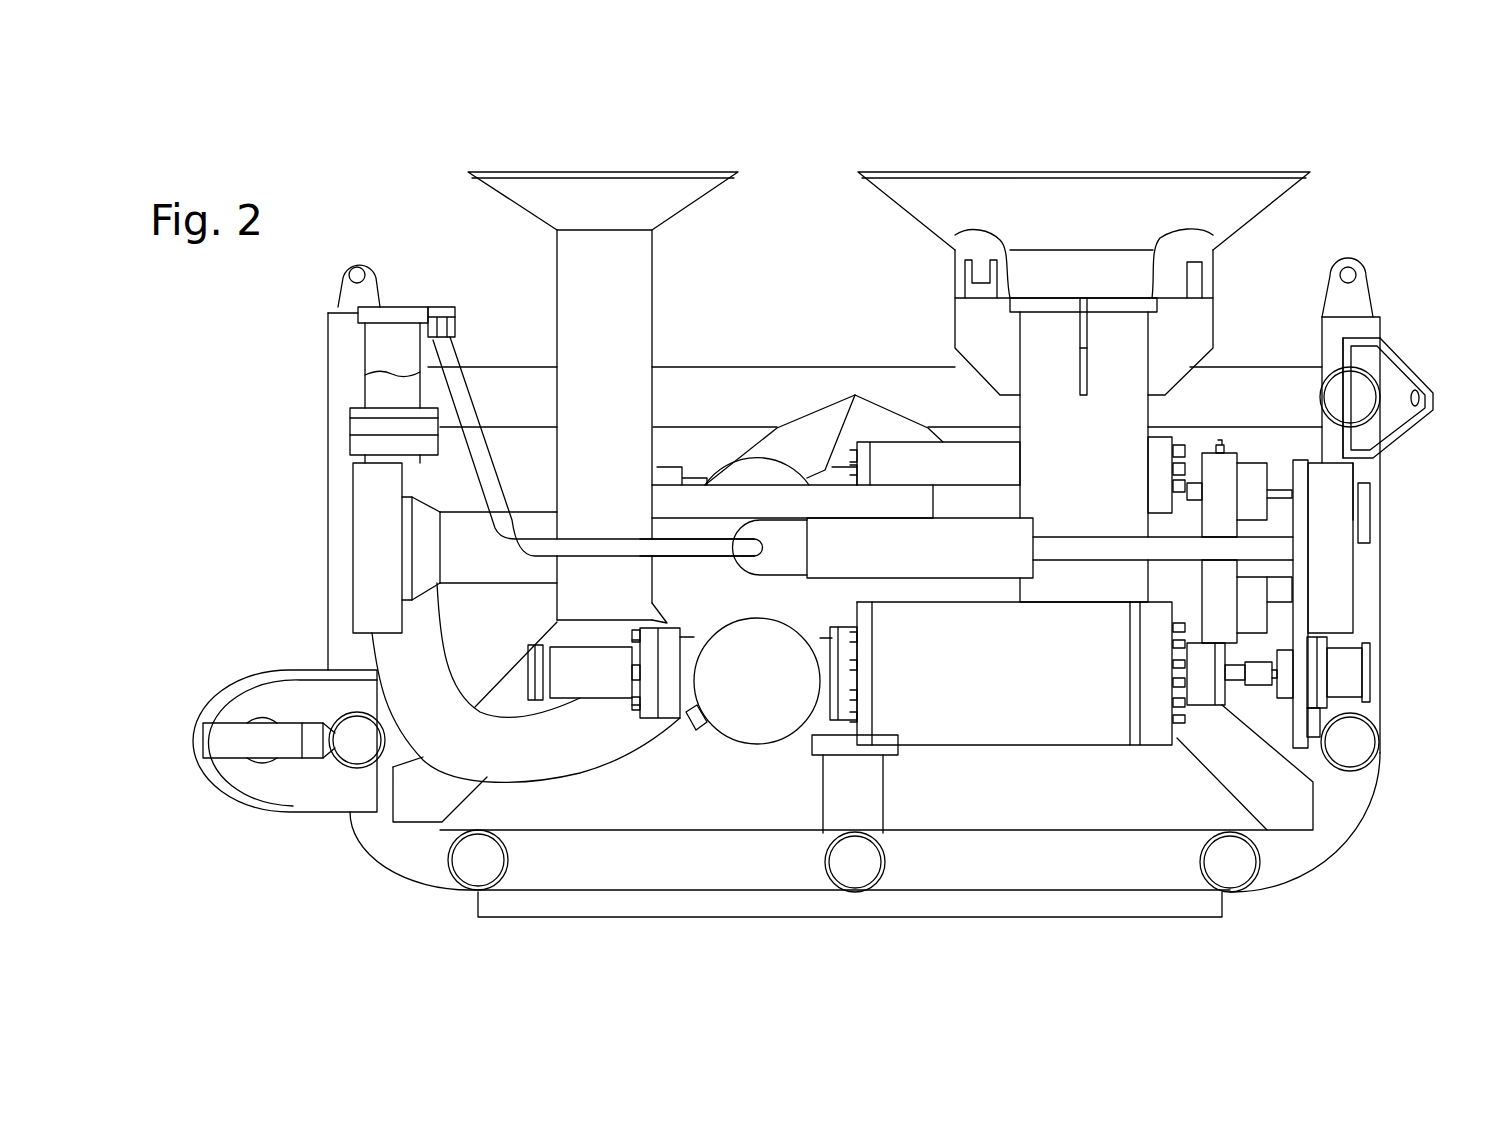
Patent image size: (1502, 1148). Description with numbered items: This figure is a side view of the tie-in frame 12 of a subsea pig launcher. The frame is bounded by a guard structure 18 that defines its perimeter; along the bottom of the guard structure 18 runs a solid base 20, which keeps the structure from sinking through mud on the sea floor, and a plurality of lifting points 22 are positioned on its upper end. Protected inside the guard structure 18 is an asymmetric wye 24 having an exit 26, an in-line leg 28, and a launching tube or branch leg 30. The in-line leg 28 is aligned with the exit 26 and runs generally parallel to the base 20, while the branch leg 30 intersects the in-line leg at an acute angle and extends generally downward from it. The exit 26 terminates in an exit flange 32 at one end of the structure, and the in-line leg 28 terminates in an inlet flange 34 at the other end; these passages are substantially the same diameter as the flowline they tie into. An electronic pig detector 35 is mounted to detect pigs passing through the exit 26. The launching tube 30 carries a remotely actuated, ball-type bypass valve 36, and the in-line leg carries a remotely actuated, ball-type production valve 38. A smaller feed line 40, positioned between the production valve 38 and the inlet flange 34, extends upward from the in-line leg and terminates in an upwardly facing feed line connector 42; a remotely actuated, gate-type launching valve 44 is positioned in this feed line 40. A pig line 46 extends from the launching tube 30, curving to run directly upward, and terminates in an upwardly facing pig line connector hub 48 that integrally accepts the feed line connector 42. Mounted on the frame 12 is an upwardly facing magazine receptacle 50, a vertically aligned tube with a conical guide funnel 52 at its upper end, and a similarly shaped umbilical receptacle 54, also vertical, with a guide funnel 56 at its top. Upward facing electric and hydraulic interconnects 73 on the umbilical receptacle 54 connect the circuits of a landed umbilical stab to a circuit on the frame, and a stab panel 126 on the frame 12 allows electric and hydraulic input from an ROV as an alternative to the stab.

The tie-in frame 12 is at (1388, 712).
The guard structure 18 is at (1358, 795).
The solid base 20 is at (1222, 908).
The lifting points 22 is at (1363, 283).
The asymmetric wye 24 is at (670, 500).
The exit 26 is at (1060, 520).
The in-line leg 28 is at (533, 573).
The launching tube 30 is at (663, 728).
The exit flange 32 is at (1340, 475).
The inlet flange 34 is at (362, 492).
The electronic pig detector 35 is at (1225, 450).
The bypass valve 36 is at (688, 730).
The production valve 38 is at (737, 470).
The feed line 40 is at (710, 550).
The feed line connector 42 is at (440, 322).
The launching valve 44 is at (773, 563).
The pig line 46 is at (385, 648).
The pig line connector hub 48 is at (357, 316).
The magazine receptacle 50 is at (568, 247).
The conical guide funnel 52 is at (508, 188).
The umbilical receptacle 54 is at (1133, 337).
The guide funnel 56 is at (897, 193).
The electric and hydraulic interconnects 73 is at (965, 266).
The stab panel 126 is at (1302, 583).